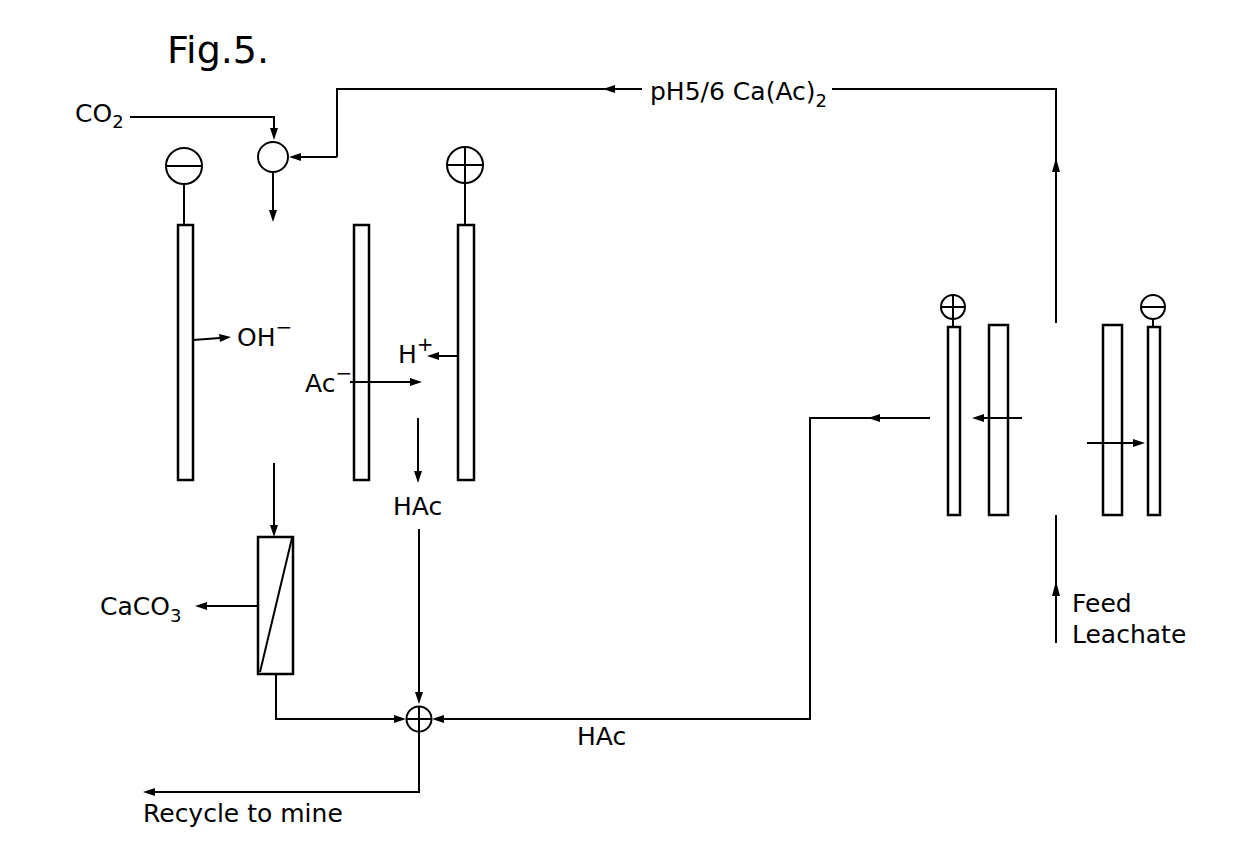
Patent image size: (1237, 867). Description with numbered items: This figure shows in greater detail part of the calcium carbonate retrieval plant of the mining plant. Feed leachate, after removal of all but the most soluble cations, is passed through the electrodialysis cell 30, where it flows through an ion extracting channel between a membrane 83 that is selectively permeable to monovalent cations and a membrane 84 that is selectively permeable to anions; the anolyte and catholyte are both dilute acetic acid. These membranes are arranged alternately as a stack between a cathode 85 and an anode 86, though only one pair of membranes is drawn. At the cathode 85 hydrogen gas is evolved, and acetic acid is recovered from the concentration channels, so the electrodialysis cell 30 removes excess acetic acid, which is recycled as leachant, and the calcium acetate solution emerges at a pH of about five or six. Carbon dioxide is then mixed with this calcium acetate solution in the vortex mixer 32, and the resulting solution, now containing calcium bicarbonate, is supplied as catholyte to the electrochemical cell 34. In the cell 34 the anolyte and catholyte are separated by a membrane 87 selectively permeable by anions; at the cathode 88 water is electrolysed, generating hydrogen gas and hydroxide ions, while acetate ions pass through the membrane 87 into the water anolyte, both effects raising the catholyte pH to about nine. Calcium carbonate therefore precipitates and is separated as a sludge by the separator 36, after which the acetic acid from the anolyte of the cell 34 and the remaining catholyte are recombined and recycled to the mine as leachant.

The electrodialysis cell 30 is at (1066, 405).
The vortex mixer 32 is at (283, 143).
The electrochemical cell 34 is at (496, 275).
The separator 36 is at (258, 560).
The membrane selectively permeable to monovalent cations 83 is at (1111, 325).
The membrane selectively permeable to anions 84 is at (999, 325).
The cathode 85 is at (1160, 408).
The anode 86 is at (948, 367).
The membrane selectively permeable by anions 87 is at (354, 261).
The cathode 88 is at (178, 261).